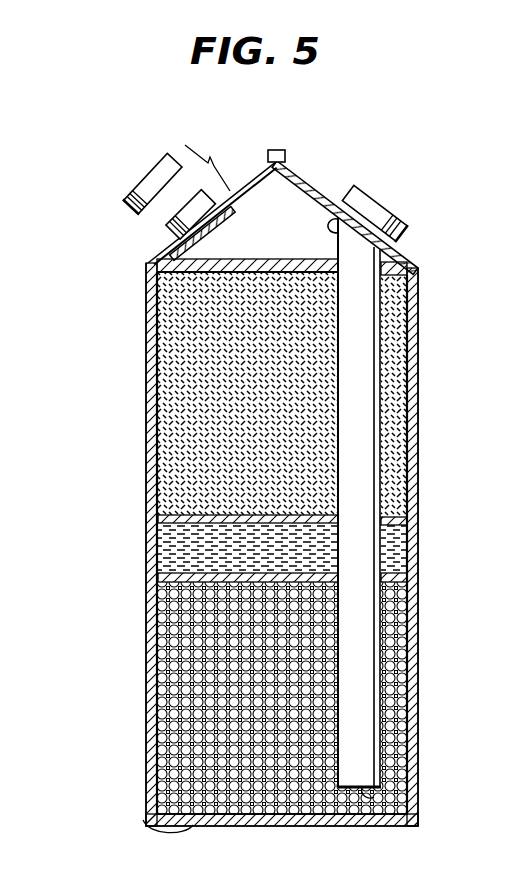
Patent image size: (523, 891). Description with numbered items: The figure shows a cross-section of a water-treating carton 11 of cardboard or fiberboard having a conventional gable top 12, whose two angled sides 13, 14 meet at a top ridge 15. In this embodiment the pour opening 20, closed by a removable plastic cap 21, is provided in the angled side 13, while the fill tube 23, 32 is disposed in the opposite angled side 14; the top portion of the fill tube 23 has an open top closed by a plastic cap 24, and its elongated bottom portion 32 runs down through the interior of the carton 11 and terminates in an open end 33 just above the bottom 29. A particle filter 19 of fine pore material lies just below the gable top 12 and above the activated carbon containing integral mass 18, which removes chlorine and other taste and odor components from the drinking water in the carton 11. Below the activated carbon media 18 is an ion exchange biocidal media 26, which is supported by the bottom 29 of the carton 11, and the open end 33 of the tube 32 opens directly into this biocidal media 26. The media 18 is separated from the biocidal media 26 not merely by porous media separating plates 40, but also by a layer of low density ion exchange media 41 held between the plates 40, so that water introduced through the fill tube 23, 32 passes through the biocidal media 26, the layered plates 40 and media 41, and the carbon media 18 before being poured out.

The carton 11 is at (150, 445).
The gable top 12 is at (366, 148).
The angled portion 13 is at (147, 250).
The angled portion 14 is at (300, 170).
The top ridge 15 is at (274, 150).
The activated carbon containing integral mass 18 is at (176, 411).
The particle filter 19 is at (278, 260).
The pour opening 20 is at (152, 232).
The plastic cap 21 is at (124, 185).
The fill tube 23 is at (335, 216).
The plastic cap 24 is at (378, 200).
The biocidal media 26 is at (174, 775).
The bottom 29 is at (156, 818).
The elongated bottom portion 32 is at (365, 433).
The open end 33 is at (374, 795).
The porous media separating plates 40 is at (168, 512).
The low density ion exchange media 41 is at (176, 553).